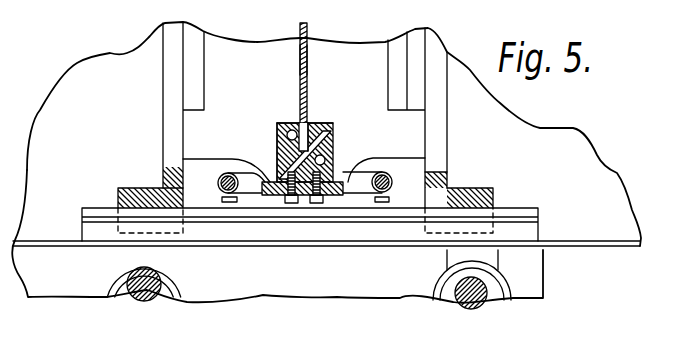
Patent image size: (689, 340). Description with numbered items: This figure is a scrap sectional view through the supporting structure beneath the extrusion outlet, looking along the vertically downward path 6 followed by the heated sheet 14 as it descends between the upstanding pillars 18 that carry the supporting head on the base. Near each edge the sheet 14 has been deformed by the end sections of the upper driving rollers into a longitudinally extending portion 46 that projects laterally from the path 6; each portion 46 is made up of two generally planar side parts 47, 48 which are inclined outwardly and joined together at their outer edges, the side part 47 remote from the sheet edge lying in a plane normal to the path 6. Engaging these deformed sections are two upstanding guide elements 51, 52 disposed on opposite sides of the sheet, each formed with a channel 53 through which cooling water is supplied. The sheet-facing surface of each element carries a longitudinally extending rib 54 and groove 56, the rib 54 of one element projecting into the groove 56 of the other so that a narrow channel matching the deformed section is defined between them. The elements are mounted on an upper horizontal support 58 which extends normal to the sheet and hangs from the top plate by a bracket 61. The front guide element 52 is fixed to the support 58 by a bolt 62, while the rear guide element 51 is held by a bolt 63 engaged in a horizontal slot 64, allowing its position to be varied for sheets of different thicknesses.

The path 6 is at (300, 58).
The sheet 14 is at (308, 33).
The pillar 18 is at (125, 257).
The longitudinally extending portion 46 is at (323, 133).
The side part 47 is at (307, 130).
The side part 48 is at (332, 143).
The guide element 51 is at (273, 162).
The guide element 52 is at (330, 197).
The channel 53 is at (292, 137).
The rib 54 is at (300, 133).
The groove 56 is at (272, 172).
The upper horizontal support 58 is at (352, 180).
The bracket 61 is at (383, 172).
The bolt 62 is at (318, 203).
The bolt 63 is at (290, 203).
The horizontal slot 64 is at (285, 200).